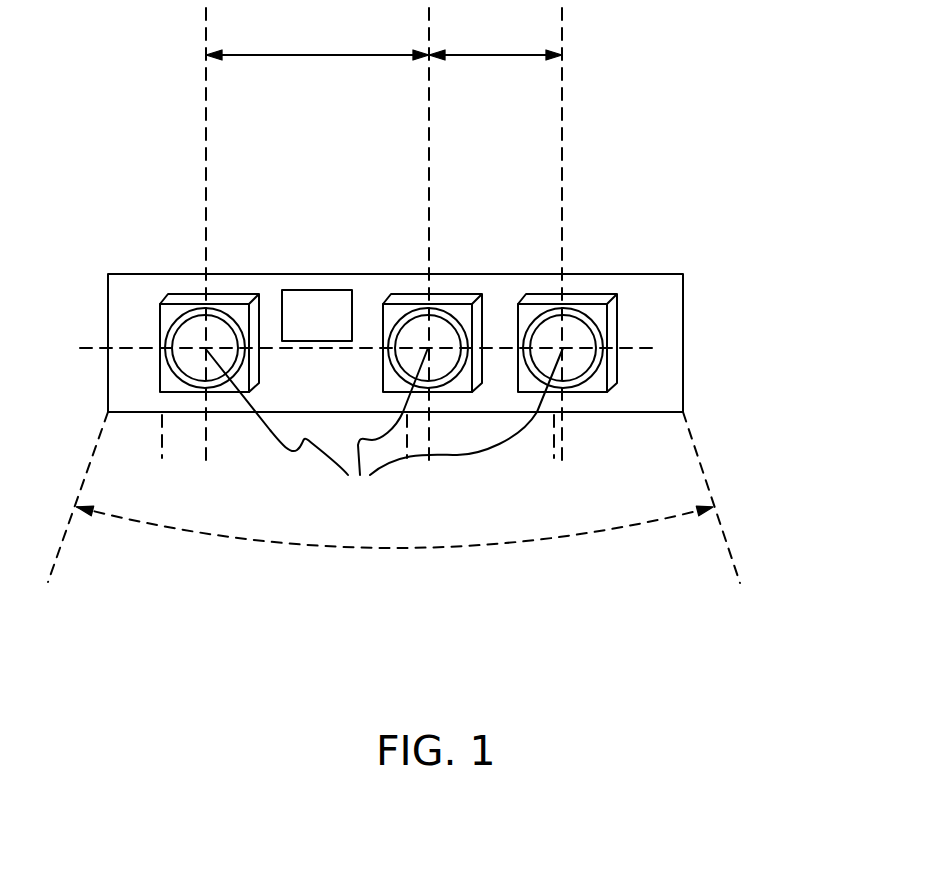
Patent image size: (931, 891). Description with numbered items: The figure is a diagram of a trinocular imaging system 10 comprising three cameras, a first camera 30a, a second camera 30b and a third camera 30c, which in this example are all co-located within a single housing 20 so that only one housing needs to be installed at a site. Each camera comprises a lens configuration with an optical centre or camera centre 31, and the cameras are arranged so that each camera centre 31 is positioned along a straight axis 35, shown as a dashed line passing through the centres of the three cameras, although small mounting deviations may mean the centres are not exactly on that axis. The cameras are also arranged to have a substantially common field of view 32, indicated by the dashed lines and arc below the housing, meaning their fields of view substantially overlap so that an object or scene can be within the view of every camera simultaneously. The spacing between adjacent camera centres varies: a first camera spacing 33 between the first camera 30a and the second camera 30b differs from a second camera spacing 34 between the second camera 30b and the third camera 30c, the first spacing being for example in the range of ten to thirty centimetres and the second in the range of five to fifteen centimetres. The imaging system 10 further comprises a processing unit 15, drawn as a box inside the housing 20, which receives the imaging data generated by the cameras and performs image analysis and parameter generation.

The imaging system 10 is at (702, 269).
The processing unit 15 is at (312, 290).
The housing 20 is at (683, 328).
The first camera 30a is at (217, 296).
The second camera 30b is at (457, 298).
The third camera 30c is at (593, 298).
The camera centre 31 is at (384, 428).
The common field of view 32 is at (632, 528).
The first camera spacing 33 is at (317, 32).
The second camera spacing 34 is at (495, 32).
The straight axis 35 is at (647, 347).